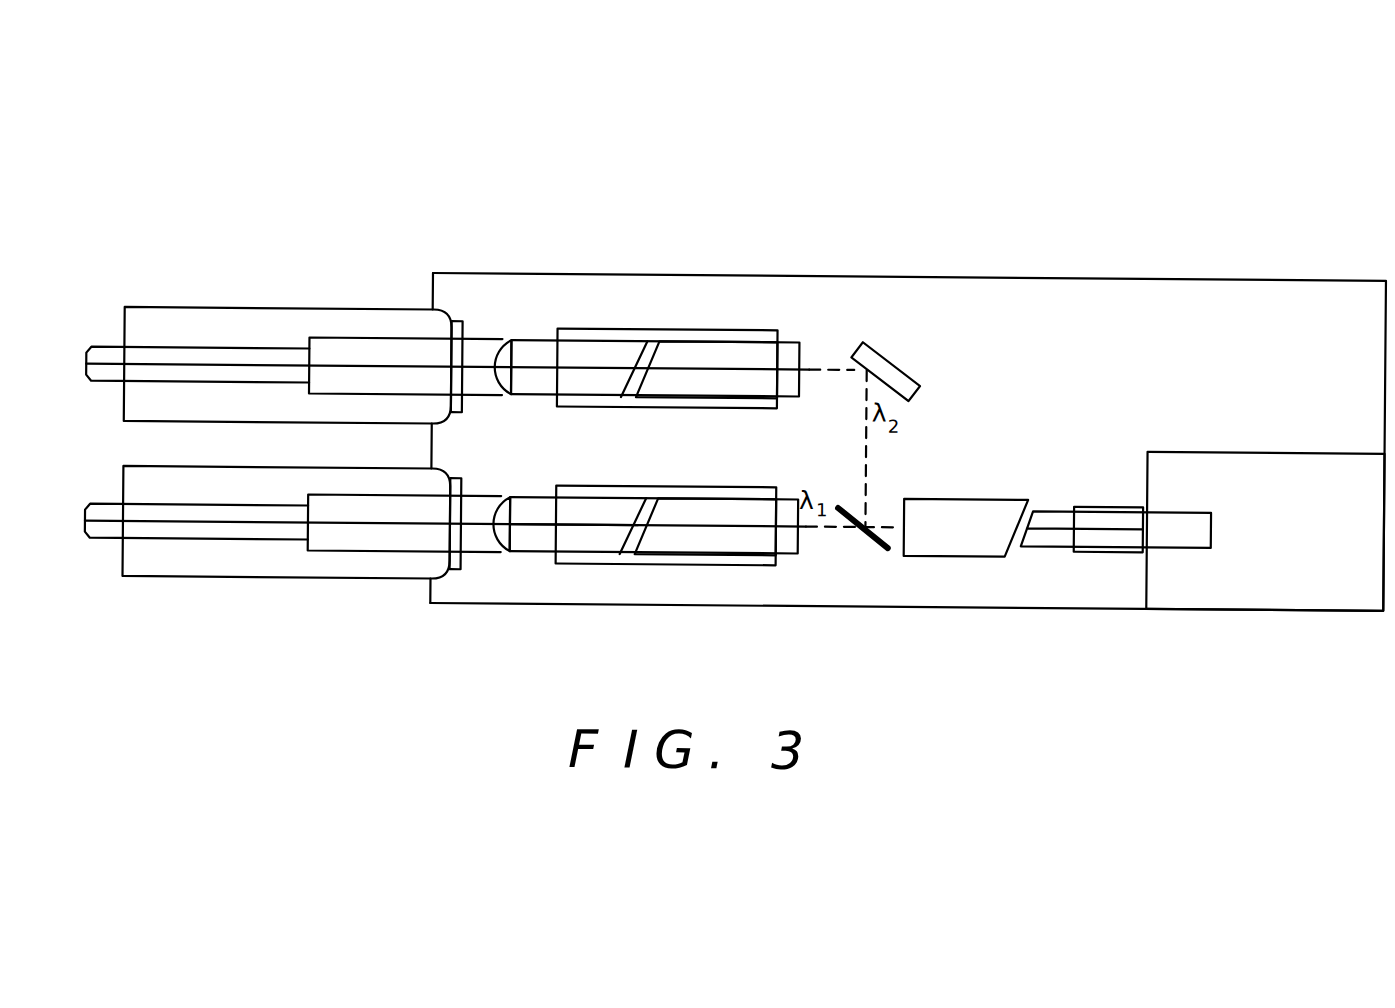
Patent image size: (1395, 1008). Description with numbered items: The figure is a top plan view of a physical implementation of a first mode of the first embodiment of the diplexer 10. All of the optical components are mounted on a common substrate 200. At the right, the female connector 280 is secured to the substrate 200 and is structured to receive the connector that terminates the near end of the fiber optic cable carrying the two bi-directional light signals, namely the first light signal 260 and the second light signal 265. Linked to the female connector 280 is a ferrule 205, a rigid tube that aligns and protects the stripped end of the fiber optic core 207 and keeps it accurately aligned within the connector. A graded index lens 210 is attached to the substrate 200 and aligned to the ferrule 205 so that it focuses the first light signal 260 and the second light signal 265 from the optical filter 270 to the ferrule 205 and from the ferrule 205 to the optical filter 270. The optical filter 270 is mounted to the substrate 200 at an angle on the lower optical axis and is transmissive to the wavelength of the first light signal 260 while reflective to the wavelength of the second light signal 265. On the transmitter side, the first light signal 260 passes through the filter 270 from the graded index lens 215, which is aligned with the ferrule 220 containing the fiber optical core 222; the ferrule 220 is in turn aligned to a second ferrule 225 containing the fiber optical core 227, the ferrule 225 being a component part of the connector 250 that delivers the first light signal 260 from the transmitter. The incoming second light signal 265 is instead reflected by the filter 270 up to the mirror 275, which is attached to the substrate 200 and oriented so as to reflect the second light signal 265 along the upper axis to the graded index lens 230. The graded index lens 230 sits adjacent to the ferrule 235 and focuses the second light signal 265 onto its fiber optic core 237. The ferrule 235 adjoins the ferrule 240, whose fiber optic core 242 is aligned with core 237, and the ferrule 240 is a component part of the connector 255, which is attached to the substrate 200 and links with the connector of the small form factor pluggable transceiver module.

The optical assembly 10 is at (985, 106).
The substrate 200 is at (1046, 271).
The ferrule 205 is at (1043, 542).
The fiber optic core 207 is at (1128, 524).
The graded index lens 210 is at (966, 553).
The graded index lens 215 is at (793, 555).
The ferrule 220 is at (530, 552).
The fiber optical core 222 is at (590, 525).
The second ferrule 225 is at (108, 543).
The fiber optical core 227 is at (400, 525).
The graded index lens 230 is at (793, 337).
The ferrule 235 is at (550, 337).
The fiber optic core 237 is at (596, 366).
The ferrule 240 is at (87, 350).
The fiber optic core 242 is at (177, 362).
The connector 250 is at (264, 580).
The connector 255 is at (272, 310).
The light signal λ1 260 is at (836, 525).
The light signal λ2 265 is at (870, 470).
The optical filter 270 is at (891, 545).
The mirror 275 is at (871, 336).
The female connector 280 is at (1285, 591).